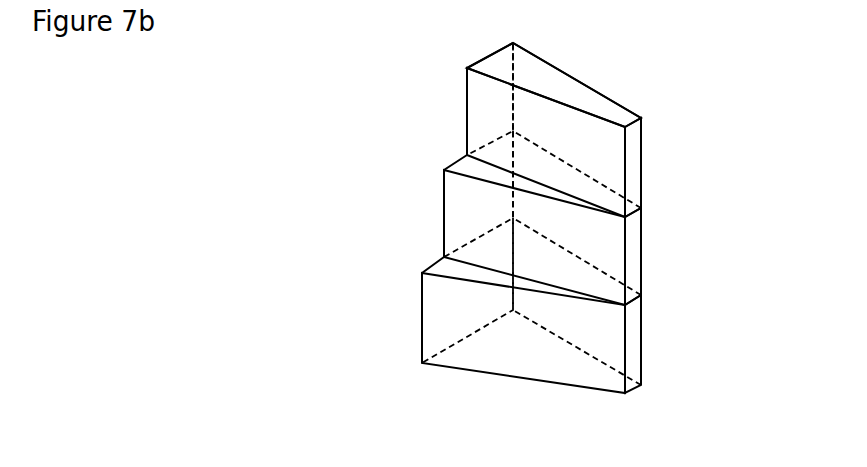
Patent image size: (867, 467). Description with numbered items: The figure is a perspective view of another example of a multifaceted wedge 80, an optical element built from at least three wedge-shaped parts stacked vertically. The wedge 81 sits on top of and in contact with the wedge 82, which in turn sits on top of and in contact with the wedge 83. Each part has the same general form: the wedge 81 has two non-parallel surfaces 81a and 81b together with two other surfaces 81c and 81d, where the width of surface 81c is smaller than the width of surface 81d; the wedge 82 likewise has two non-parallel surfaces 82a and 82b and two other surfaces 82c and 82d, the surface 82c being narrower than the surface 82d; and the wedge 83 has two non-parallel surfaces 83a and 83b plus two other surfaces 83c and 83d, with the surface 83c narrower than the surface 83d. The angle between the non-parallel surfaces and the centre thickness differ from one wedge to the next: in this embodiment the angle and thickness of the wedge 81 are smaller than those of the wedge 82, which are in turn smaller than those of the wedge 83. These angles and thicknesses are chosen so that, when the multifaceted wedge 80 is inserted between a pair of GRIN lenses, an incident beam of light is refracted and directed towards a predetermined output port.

The multifaceted wedge 80 is at (323, 309).
The wedge 81 is at (467, 107).
The non-parallel surface 81a is at (603, 146).
The non-parallel surface 81b is at (537, 105).
The surface 81c is at (637, 164).
The surface 81d is at (518, 55).
The wedge 82 is at (444, 212).
The non-parallel surface 82a is at (530, 247).
The non-parallel surface 82b is at (577, 235).
The surface 82c is at (633, 282).
The surface 82d is at (480, 196).
The wedge 83 is at (422, 318).
The non-parallel surface 83a is at (516, 342).
The non-parallel surface 83b is at (580, 321).
The surface 83c is at (632, 368).
The surface 83d is at (443, 318).